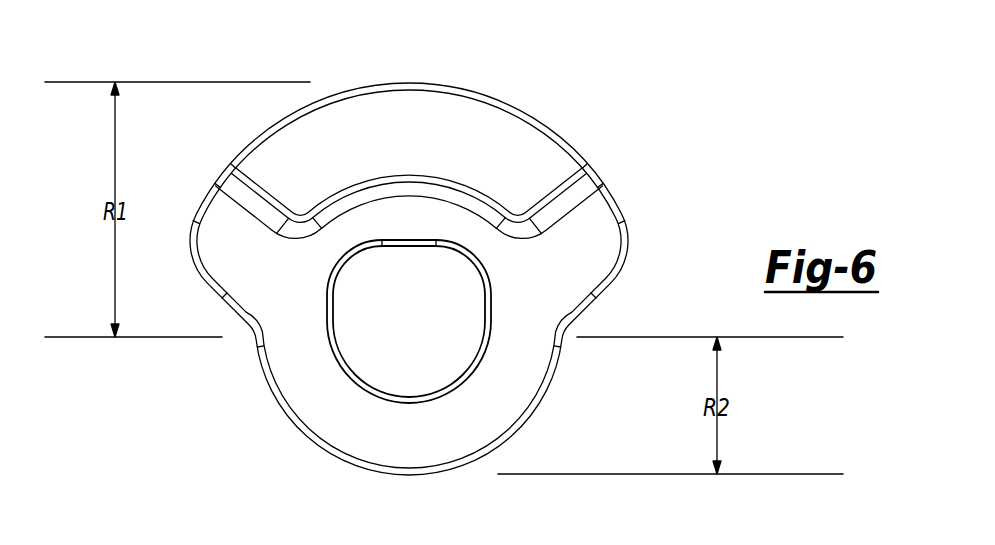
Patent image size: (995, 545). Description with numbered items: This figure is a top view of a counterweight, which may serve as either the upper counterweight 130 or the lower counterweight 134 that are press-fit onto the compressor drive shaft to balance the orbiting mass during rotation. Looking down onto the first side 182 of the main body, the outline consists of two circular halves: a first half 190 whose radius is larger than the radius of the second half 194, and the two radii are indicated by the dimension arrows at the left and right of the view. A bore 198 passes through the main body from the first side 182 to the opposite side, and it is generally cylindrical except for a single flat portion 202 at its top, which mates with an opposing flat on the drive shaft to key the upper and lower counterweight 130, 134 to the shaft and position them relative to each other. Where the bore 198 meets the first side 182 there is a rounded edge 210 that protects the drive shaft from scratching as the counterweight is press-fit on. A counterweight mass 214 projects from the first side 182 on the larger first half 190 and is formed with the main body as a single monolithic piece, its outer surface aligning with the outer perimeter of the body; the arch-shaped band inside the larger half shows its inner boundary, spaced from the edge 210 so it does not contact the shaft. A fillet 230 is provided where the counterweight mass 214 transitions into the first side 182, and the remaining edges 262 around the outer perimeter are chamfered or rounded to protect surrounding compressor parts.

The upper counterweight 130 is at (434, 246).
The lower counterweight 134 is at (434, 246).
The first side 182 is at (600, 254).
The first half 190 is at (204, 221).
The second half 194 is at (331, 390).
The bore 198 is at (360, 386).
The flat portion 202 is at (403, 245).
The rounded edge 210 is at (328, 370).
The counterweight mass 214 is at (362, 122).
The fillet 230 is at (578, 192).
The remaining edges 262 is at (427, 243).